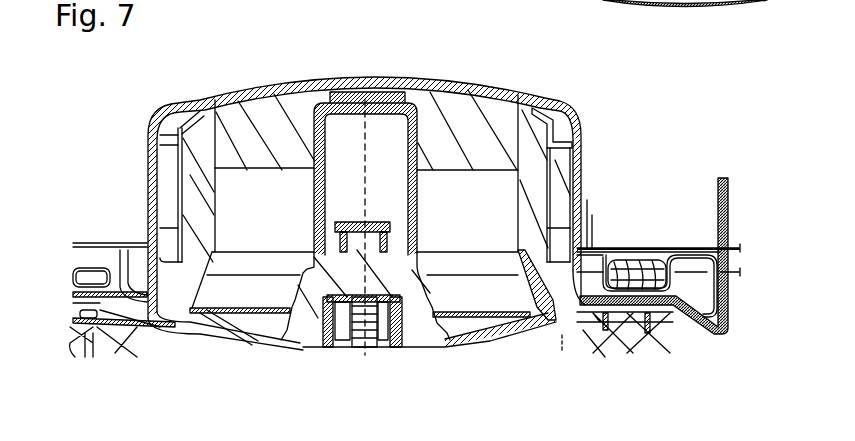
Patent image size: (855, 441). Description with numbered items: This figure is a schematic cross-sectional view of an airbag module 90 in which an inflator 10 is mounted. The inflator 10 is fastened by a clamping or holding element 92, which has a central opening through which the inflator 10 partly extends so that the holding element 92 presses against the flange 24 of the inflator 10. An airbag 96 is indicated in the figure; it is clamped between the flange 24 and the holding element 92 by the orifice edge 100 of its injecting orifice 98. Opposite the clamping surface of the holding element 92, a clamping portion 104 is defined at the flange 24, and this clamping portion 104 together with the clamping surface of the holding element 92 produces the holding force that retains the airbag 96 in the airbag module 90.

The inflator 10 is at (264, 62).
The flange 24 is at (592, 320).
The airbag module 90 is at (667, 180).
The holding element 92 is at (687, 255).
The airbag 96 is at (733, 207).
The injecting orifice 98 is at (582, 246).
The orifice edge 100 is at (647, 360).
The clamping portion 104 is at (640, 262).